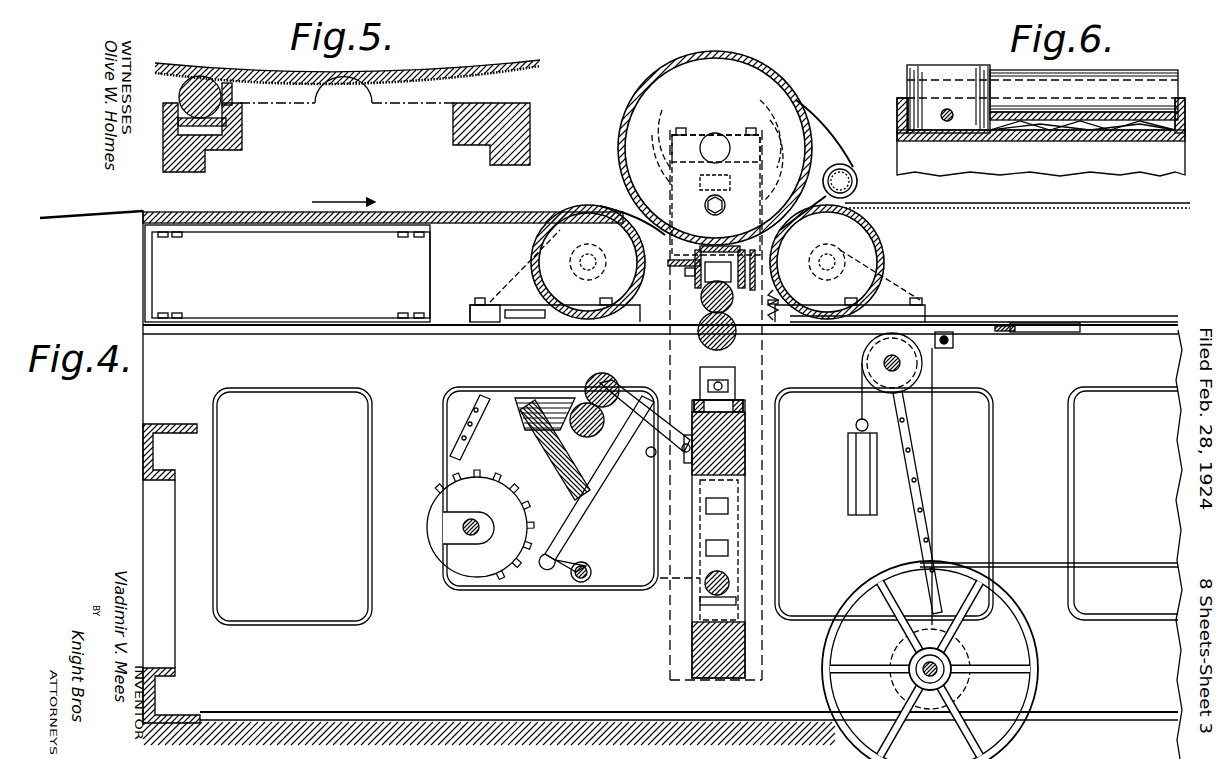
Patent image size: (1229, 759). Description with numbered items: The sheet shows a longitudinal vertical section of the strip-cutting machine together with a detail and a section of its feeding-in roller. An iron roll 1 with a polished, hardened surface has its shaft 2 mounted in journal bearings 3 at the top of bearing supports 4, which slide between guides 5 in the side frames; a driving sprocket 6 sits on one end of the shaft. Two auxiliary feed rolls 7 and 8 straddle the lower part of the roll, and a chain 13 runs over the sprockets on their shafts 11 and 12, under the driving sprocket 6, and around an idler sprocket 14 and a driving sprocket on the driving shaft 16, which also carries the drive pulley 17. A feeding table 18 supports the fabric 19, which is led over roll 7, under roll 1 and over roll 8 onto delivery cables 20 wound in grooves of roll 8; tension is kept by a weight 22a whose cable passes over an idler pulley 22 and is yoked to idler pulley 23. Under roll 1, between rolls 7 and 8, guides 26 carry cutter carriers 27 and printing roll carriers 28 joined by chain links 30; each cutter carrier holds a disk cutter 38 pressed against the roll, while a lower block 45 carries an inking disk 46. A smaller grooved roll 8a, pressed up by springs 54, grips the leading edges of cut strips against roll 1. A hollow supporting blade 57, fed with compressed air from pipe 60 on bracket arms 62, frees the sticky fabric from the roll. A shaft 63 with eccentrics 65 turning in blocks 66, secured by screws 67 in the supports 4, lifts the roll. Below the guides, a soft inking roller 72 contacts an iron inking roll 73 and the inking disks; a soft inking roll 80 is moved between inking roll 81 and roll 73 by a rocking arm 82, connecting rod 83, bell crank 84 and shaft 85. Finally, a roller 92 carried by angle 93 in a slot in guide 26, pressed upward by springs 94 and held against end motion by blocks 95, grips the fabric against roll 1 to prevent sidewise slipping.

In FIG. 5, the iron cylinder or roll 1 is at (508, 57).
In FIG. 4, the iron cylinder or roll 1 is at (781, 52).
In FIG. 4, the shaft 2 is at (715, 133).
In FIG. 4, the journal bearings 3 is at (665, 122).
In FIG. 4, the bearing supports 4 is at (660, 152).
In FIG. 4, the guides 5 is at (660, 536).
In FIG. 5, the driving sprocket 6 is at (173, 95).
In FIG. 4, the auxiliary feed roll 7 is at (535, 244).
In FIG. 4, the auxiliary feed roll 8 is at (880, 240).
In FIG. 4, the smaller roll 8a is at (800, 238).
In FIG. 4, the shaft 11 is at (589, 255).
In FIG. 4, the shaft 12 is at (838, 262).
In FIG. 4, the chain 13 is at (465, 418).
In FIG. 4, the idler sprocket 14 is at (480, 525).
In FIG. 4, the driving shaft 16 is at (922, 672).
In FIG. 4, the drive pulley 17 is at (1030, 648).
In FIG. 4, the feeding table 18 is at (362, 222).
In FIG. 5, the fabric 19 is at (505, 66).
In FIG. 4, the fabric 19 is at (80, 220).
In FIG. 4, the cables 20 is at (1140, 208).
In FIG. 4, the idler pulley 22 is at (875, 365).
In FIG. 4, the weight 22a is at (856, 457).
In FIG. 4, the idler pulley 23 is at (1080, 334).
In FIG. 5, the guides 26 is at (512, 127).
In FIG. 6, the guides 26 is at (1041, 137).
In FIG. 4, the guides 26 is at (700, 292).
In FIG. 4, the cutter carriers 27 is at (740, 245).
In FIG. 4, the printing roll carriers 28 is at (727, 396).
In FIG. 4, the chain links 30 is at (750, 435).
In FIG. 5, the disk cutter 38 is at (365, 97).
In FIG. 4, the lower block 45 is at (688, 273).
In FIG. 4, the inking disk 46 is at (712, 378).
In FIG. 4, the springs 54 is at (776, 322).
In FIG. 4, the supporting blade 57 is at (800, 160).
In FIG. 4, the pipe 60 is at (850, 166).
In FIG. 4, the bracket arms 62 is at (822, 128).
In FIG. 4, the shaft 63 is at (730, 578).
In FIG. 4, the eccentrics 65 is at (660, 578).
In FIG. 4, the blocks 66 is at (736, 601).
In FIG. 4, the screws 67 is at (660, 655).
In FIG. 4, the inking roller 72 is at (707, 303).
In FIG. 4, the iron inking roll 73 is at (698, 334).
In FIG. 4, the soft inking roll 80 is at (602, 378).
In FIG. 4, the inking roll 81 is at (606, 428).
In FIG. 4, the rocking arm 82 is at (640, 400).
In FIG. 4, the connecting rod 83 is at (600, 492).
In FIG. 4, the bell crank 84 is at (570, 565).
In FIG. 4, the shaft 85 is at (580, 582).
In FIG. 5, the roller 92 is at (190, 92).
In FIG. 6, the roller 92 is at (1160, 76).
In FIG. 4, the roller 92 is at (686, 245).
In FIG. 5, the angle 93 is at (232, 94).
In FIG. 6, the angle 93 is at (1058, 125).
In FIG. 5, the springs 94 is at (218, 140).
In FIG. 6, the springs 94 is at (1145, 130).
In FIG. 6, the blocks 95 is at (930, 70).